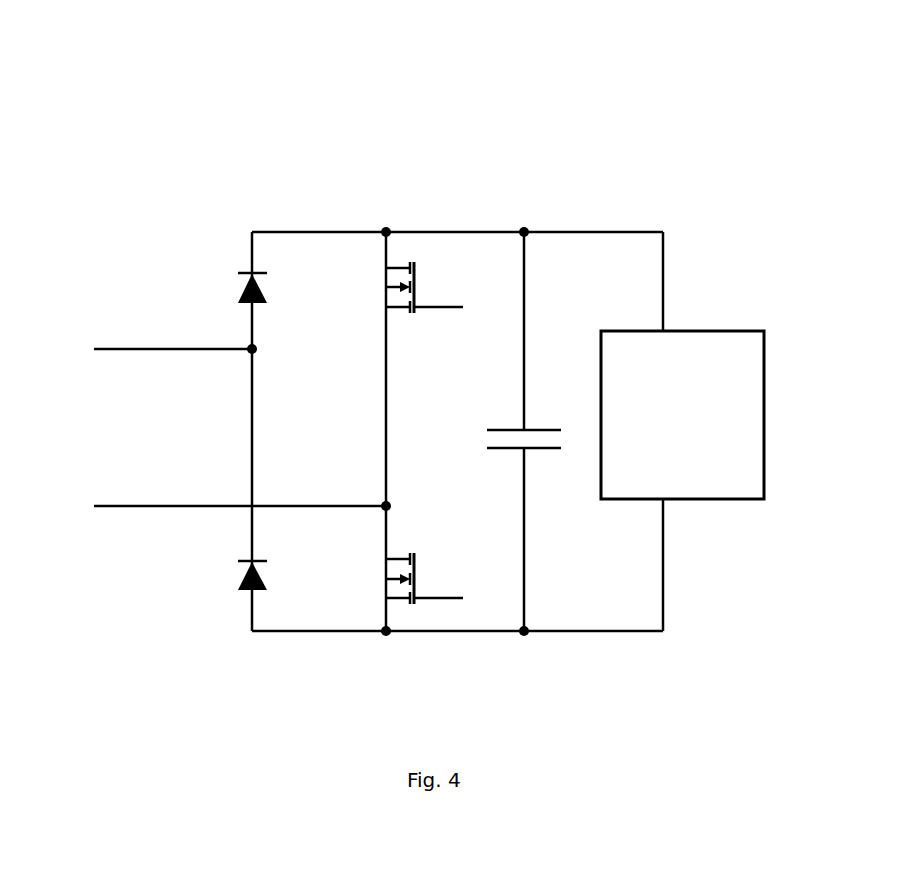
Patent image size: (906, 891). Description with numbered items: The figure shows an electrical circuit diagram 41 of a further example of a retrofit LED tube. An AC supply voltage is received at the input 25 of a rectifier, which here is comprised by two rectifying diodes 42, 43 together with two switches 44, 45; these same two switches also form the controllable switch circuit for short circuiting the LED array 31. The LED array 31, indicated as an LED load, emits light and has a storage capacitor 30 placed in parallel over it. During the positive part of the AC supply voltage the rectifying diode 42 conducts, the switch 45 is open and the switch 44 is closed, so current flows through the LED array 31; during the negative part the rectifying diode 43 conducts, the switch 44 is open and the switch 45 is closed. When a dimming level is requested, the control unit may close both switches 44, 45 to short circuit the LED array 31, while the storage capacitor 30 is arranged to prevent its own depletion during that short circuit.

The electrical circuit diagram 41 is at (681, 84).
The input 25 is at (83, 421).
The rectifying diode 42 is at (222, 254).
The rectifying diode 43 is at (222, 594).
The switch 45 is at (364, 240).
The switch 44 is at (363, 611).
The storage capacitor 30 is at (552, 480).
The LED array 31 is at (721, 490).